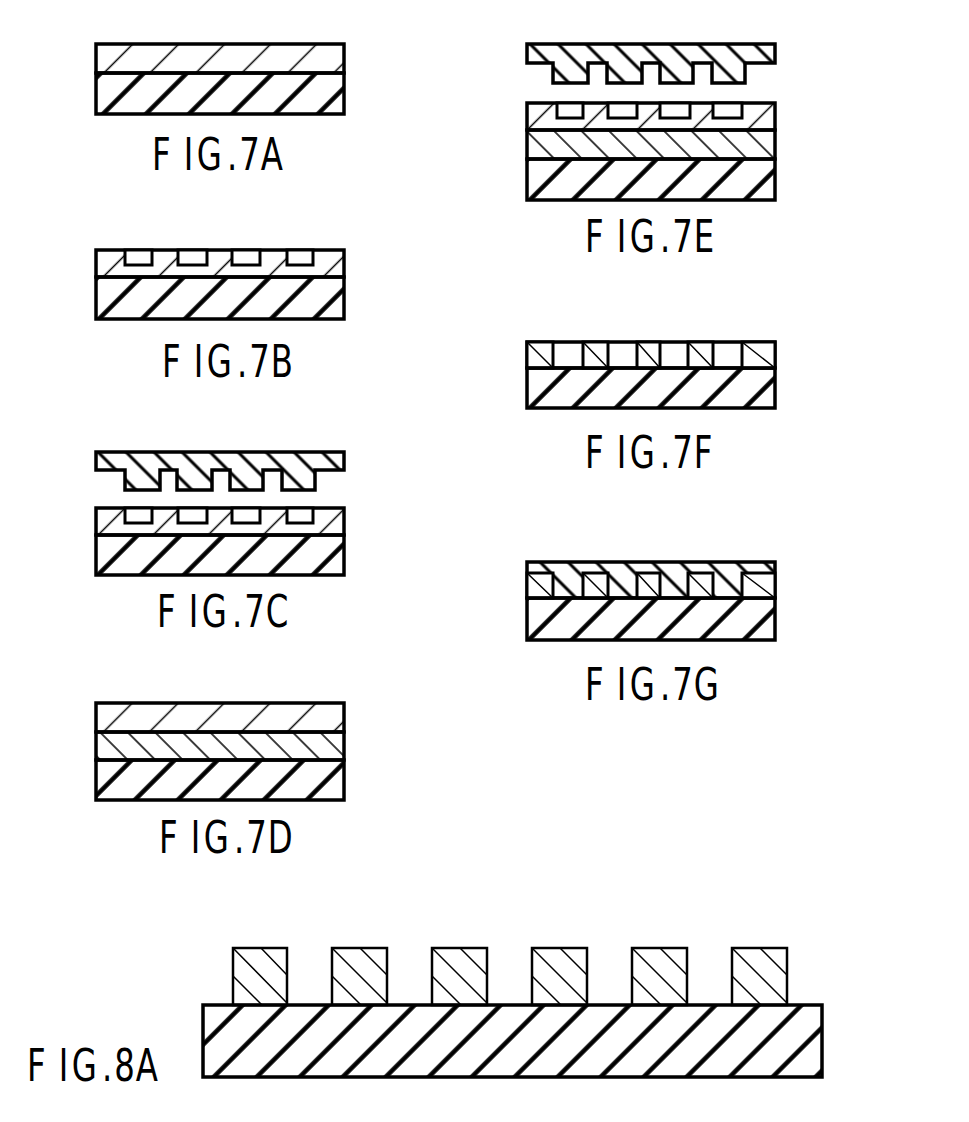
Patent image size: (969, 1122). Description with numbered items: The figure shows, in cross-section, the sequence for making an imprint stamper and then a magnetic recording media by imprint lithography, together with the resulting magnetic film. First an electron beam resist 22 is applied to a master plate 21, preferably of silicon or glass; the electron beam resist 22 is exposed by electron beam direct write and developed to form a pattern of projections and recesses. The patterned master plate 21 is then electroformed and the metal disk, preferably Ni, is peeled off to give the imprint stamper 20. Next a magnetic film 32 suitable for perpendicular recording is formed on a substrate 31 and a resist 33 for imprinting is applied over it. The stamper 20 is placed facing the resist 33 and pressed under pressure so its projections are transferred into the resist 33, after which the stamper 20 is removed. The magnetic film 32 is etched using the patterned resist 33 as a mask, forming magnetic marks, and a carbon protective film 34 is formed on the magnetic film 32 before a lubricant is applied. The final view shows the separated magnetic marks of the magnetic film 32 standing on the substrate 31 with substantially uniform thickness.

In FIG. 7C, the imprint stamper 20 is at (330, 474).
In FIG. 7E, the imprint stamper 20 is at (761, 65).
In FIG. 7A, the master plate 21 is at (330, 107).
In FIG. 7B, the master plate 21 is at (330, 312).
In FIG. 7C, the master plate 21 is at (330, 568).
In FIG. 7A, the electron beam resist 22 is at (330, 71).
In FIG. 7B, the electron beam resist 22 is at (330, 276).
In FIG. 7C, the electron beam resist 22 is at (330, 531).
In FIG. 7D, the substrate 31 is at (330, 786).
In FIG. 7E, the substrate 31 is at (761, 193).
In FIG. 7F, the substrate 31 is at (761, 401).
In FIG. 7G, the substrate 31 is at (761, 635).
In FIG. 8A, the substrate 31 is at (801, 1050).
In FIG. 7D, the magnetic film 32 is at (330, 755).
In FIG. 7E, the magnetic film 32 is at (761, 156).
In FIG. 7F, the magnetic film 32 is at (761, 365).
In FIG. 7G, the magnetic film 32 is at (761, 602).
In FIG. 8A, the magnetic film 32 is at (660, 955).
In FIG. 7D, the resist 33 is at (330, 726).
In FIG. 7E, the resist 33 is at (761, 126).
In FIG. 7G, the carbon protective film 34 is at (761, 573).